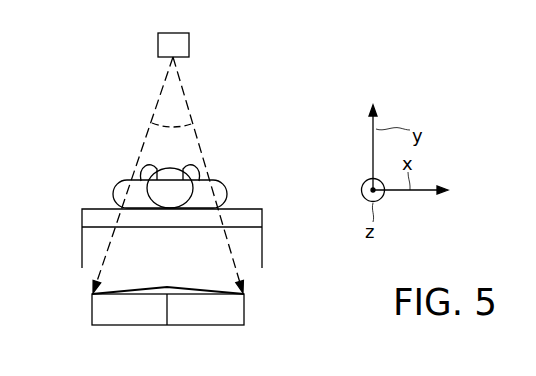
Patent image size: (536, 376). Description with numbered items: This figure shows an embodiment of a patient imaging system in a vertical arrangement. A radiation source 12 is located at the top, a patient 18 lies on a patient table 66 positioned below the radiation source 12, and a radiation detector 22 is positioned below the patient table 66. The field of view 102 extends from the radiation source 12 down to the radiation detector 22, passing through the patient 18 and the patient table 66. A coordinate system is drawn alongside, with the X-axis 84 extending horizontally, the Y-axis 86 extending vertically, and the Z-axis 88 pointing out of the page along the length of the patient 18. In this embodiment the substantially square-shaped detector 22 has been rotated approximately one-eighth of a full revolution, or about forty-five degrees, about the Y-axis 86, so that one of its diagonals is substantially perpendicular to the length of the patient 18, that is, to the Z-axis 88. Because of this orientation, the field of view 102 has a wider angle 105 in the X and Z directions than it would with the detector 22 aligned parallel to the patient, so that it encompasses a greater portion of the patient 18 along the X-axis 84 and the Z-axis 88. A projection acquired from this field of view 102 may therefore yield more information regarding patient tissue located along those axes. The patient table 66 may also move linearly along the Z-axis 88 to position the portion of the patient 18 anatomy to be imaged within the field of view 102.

The radiation source 12 is at (187, 42).
The field of view 102 is at (170, 143).
The angle 105 is at (178, 116).
The patient 18 is at (227, 182).
The patient table 66 is at (263, 240).
The radiation detector 22 is at (218, 320).
The Y-axis 86 is at (372, 130).
The X-axis 84 is at (418, 192).
The Z-axis 88 is at (362, 190).